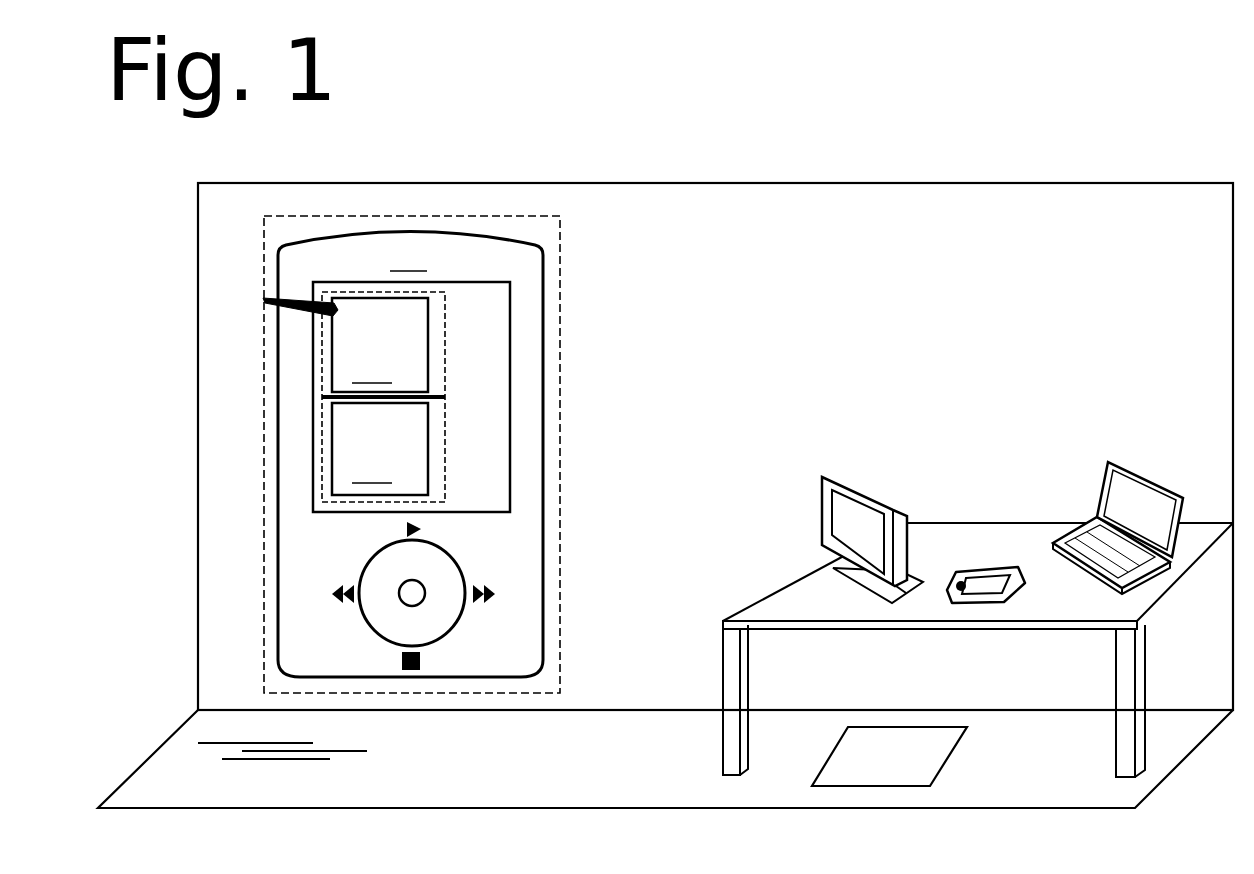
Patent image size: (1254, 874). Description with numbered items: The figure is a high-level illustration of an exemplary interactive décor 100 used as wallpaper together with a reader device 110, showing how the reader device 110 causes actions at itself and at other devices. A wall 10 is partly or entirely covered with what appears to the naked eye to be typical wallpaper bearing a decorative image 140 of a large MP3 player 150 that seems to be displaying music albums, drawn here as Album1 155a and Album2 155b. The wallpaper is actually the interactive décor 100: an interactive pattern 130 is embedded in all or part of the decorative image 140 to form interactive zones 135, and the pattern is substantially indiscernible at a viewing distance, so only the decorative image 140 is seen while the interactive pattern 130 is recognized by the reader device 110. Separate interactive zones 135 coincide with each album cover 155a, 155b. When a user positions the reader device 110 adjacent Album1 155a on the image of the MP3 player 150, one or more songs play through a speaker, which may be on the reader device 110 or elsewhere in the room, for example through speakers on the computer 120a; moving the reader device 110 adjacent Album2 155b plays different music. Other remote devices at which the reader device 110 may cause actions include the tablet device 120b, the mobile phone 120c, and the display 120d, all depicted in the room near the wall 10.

The interactive décor 100 is at (648, 158).
The wall 10 is at (412, 183).
The reader device 110 is at (280, 289).
The computer 120a is at (1112, 465).
The tablet device 120b is at (922, 727).
The mobile phone 120c is at (987, 568).
The display 120d is at (830, 475).
The interactive pattern 130 is at (446, 293).
The interactive zone 135 is at (430, 362).
The decorative image 140 is at (515, 216).
The image of MP3 player 150 is at (408, 262).
The album cover (Album1) 155a is at (380, 345).
The album cover (Album2) 155b is at (380, 449).